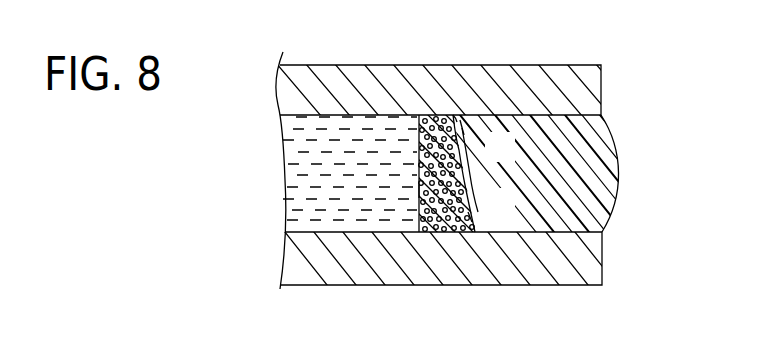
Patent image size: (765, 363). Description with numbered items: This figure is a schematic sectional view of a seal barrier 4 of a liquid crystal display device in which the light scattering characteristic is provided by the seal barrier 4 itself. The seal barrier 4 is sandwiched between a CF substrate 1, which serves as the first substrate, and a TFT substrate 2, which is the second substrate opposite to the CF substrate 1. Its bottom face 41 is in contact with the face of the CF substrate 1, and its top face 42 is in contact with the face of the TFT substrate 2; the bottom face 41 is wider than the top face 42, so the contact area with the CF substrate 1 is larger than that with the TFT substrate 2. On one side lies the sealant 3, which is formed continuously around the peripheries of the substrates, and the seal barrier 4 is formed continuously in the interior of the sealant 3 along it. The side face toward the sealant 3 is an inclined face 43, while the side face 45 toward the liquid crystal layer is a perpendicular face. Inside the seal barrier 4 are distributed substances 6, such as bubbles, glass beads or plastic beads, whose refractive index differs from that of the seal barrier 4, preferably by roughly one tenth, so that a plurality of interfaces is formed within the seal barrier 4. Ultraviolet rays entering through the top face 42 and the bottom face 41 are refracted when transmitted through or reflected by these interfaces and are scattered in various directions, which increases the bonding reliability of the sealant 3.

The CF substrate 1 is at (592, 255).
The TFT substrate 2 is at (592, 88).
The sealant 3 is at (612, 168).
The seal barrier 4 is at (474, 196).
The substances 6 is at (463, 149).
The bottom face 41 is at (469, 214).
The top face 42 is at (453, 122).
The inclined face 43 is at (462, 128).
The side face 45 is at (418, 191).